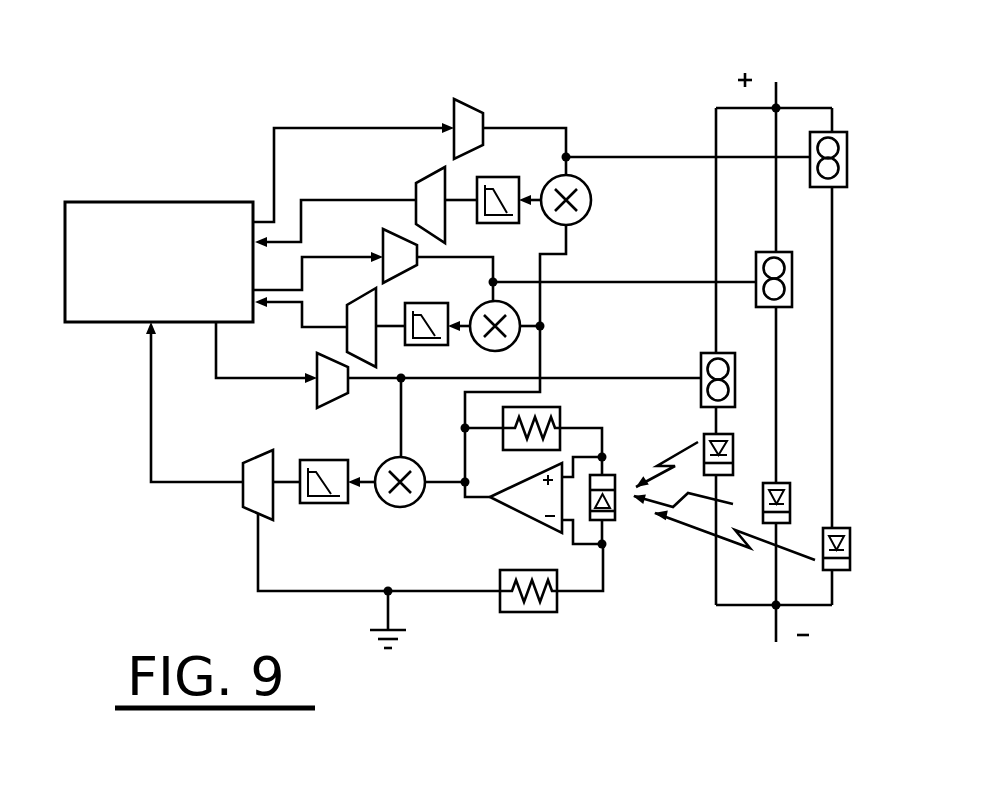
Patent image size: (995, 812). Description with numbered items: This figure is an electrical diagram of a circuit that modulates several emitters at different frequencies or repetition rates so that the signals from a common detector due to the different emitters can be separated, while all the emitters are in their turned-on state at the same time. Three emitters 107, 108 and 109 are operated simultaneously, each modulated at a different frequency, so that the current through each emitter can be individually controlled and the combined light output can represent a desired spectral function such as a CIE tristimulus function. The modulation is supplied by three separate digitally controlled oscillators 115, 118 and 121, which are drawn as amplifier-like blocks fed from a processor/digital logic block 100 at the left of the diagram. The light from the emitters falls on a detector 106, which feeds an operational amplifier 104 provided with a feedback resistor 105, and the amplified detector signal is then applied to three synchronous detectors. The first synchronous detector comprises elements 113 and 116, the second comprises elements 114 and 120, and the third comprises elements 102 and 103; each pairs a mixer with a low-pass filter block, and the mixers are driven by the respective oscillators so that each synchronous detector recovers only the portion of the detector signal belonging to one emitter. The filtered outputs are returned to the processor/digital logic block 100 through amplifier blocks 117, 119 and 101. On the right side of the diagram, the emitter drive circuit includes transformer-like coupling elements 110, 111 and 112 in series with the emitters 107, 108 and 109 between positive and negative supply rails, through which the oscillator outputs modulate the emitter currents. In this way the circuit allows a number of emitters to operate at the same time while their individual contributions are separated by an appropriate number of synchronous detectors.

The processor/digital logic 100 is at (163, 203).
The amplifier 101 is at (238, 498).
The synchronous detector element 102 is at (320, 503).
The synchronous detector element 103 is at (413, 507).
The operational amplifier 104 is at (512, 510).
The feedback resistor 105 is at (562, 407).
The photodiode 106 is at (613, 522).
The emitter 107 is at (734, 452).
The emitter 108 is at (791, 502).
The emitter 109 is at (851, 545).
The current transformer 110 is at (736, 385).
The current transformer 111 is at (792, 289).
The current transformer 112 is at (847, 172).
The synchronous detector element 113 is at (592, 200).
The synchronous detector element 114 is at (518, 308).
The digitally controlled oscillator 115 is at (472, 105).
The synchronous detector element 116 is at (512, 178).
The amplifier 117 is at (423, 181).
The digitally controlled oscillator 118 is at (412, 272).
The amplifier 119 is at (365, 292).
The synchronous detector element 120 is at (449, 343).
The digitally controlled oscillator 121 is at (318, 360).